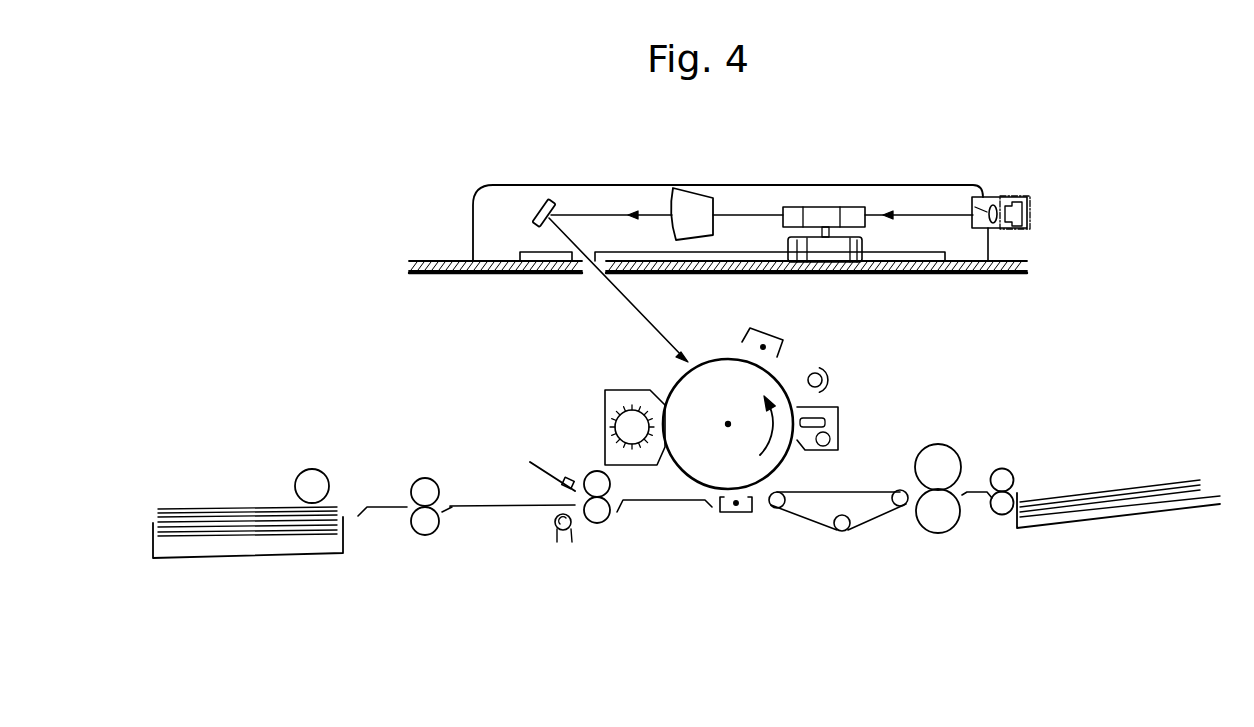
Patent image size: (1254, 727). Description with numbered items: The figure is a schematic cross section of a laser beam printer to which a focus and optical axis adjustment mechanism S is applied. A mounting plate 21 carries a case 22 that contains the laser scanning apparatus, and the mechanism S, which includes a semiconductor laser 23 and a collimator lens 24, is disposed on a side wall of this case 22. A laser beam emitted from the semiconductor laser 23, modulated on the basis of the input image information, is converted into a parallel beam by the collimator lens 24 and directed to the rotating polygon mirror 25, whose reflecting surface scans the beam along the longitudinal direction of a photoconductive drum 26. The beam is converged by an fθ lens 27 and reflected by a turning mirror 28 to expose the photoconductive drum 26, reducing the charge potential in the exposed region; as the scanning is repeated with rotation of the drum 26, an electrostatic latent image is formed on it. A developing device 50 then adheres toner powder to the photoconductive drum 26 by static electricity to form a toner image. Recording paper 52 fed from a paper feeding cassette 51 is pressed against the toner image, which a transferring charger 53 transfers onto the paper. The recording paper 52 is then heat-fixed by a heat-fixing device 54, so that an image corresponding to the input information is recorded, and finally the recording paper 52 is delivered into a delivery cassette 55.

The mounting plate 21 is at (997, 272).
The case 22 is at (990, 248).
The semiconductor laser 23 is at (1027, 200).
The collimator lens 24 is at (972, 197).
The polygon mirror 25 is at (818, 207).
The photoconductive drum 26 is at (723, 358).
The fθ lens 27 is at (698, 188).
The turning mirror 28 is at (540, 204).
The focus and optical axis adjustment mechanism S is at (1004, 194).
The developing device 50 is at (610, 388).
The paper feeding cassette 51 is at (282, 558).
The recording paper 52 is at (208, 507).
The transferring charger 53 is at (735, 515).
The heat-fixing device 54 is at (940, 478).
The delivery cassette 55 is at (1113, 520).